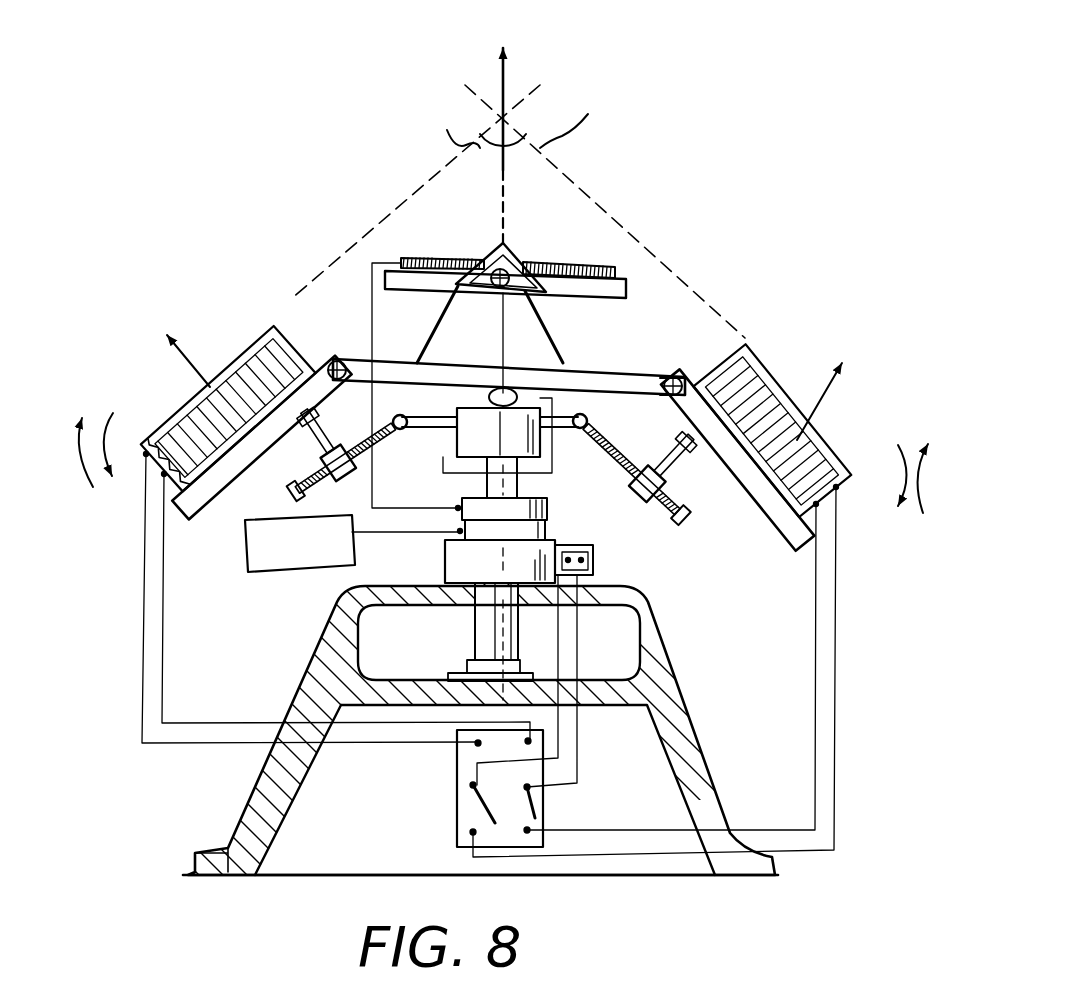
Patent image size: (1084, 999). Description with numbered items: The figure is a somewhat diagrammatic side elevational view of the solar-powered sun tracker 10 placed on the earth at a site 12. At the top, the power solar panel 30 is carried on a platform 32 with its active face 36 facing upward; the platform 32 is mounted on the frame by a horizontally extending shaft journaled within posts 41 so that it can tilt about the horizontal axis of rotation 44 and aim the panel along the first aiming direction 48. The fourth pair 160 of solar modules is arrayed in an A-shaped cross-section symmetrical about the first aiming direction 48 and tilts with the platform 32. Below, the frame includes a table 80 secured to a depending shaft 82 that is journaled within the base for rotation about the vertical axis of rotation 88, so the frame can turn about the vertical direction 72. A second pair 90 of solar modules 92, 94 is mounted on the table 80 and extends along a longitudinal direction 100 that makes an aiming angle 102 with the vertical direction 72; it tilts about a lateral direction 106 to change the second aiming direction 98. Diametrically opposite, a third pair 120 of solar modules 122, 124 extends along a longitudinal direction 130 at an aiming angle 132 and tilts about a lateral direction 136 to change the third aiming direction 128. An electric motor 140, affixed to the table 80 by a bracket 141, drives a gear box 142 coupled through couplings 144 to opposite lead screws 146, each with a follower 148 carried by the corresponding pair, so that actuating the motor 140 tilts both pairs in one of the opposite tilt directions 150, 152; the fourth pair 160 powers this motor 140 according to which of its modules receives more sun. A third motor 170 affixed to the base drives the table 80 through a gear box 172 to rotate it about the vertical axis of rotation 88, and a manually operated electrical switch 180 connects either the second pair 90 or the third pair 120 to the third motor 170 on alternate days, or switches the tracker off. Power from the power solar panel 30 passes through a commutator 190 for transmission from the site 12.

The sun tracker 10 is at (247, 808).
The site 12 is at (190, 872).
The power solar panel 30 is at (580, 262).
The platform 32 is at (613, 292).
The active face 36 is at (432, 256).
The posts 41 is at (455, 328).
The horizontal axis of rotation 44 is at (508, 288).
The first aiming direction 48 is at (503, 66).
The vertical direction 72 is at (503, 350).
The table 80 is at (640, 374).
The depending shaft 82 is at (475, 628).
The vertical axis of rotation 88 is at (514, 208).
The second pair of solar modules 90 is at (752, 338).
The solar module 92 is at (823, 401).
The solar module 94 is at (838, 475).
The second aiming direction 98 is at (820, 380).
The longitudinal direction 100 is at (715, 250).
The aiming angle 102 is at (578, 120).
The lateral direction 106 is at (665, 400).
The third pair of solar modules 120 is at (268, 325).
The solar module 122 is at (237, 380).
The solar module 124 is at (154, 448).
The third aiming direction 128 is at (170, 330).
The longitudinal direction 130 is at (385, 222).
The aiming angle 132 is at (440, 125).
The lateral direction 136 is at (336, 362).
The electric motor 140 is at (525, 390).
The bracket 141 is at (452, 447).
The gear box 142 is at (473, 450).
The couplings 144 is at (393, 422).
The lead screws 146 is at (312, 472).
The follower 148 is at (320, 458).
The tilt direction 150 is at (105, 482).
The tilt direction 152 is at (76, 472).
The fourth pair of solar modules 160 is at (490, 150).
The third motor 170 is at (595, 558).
The gear box 172 is at (445, 558).
The electrical switch 180 is at (455, 795).
The commutator 190 is at (547, 510).